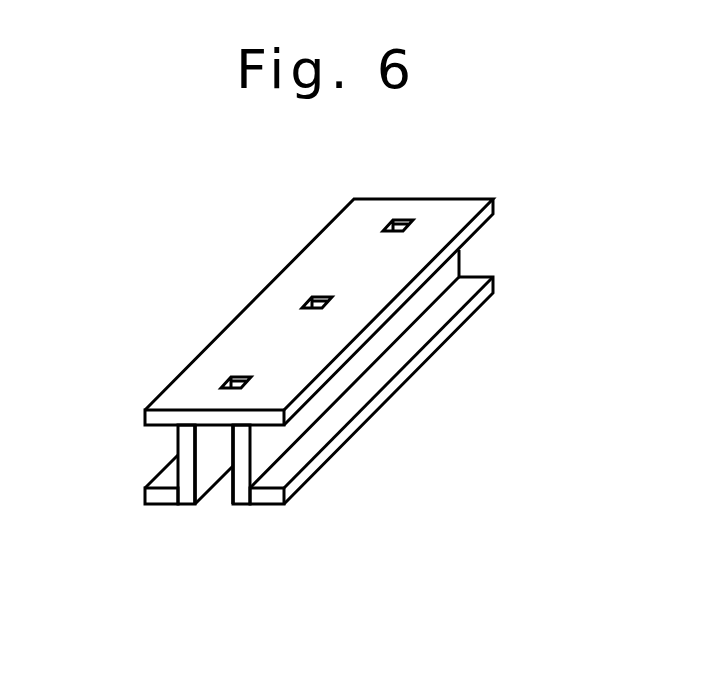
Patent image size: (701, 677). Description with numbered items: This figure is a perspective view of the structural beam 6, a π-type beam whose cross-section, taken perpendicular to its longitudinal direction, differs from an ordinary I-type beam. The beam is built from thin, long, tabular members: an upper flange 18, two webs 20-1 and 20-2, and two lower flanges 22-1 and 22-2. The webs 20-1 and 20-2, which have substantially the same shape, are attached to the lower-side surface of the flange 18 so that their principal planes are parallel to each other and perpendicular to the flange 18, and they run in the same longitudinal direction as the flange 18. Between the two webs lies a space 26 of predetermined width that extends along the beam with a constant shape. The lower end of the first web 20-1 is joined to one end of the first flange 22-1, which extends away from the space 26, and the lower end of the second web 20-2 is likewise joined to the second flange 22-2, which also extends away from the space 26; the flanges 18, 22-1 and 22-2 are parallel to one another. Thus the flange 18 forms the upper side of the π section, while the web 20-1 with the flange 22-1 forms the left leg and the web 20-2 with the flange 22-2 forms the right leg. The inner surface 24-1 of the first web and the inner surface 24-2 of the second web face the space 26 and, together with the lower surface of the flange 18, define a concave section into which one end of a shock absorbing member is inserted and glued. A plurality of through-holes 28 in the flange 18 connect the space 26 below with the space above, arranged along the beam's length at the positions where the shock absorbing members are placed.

The structural beam 6 is at (97, 248).
The flange 18 is at (144, 421).
The first web 20-1 is at (207, 452).
The second web 20-2 is at (265, 445).
The first flange 22-1 is at (160, 507).
The second flange 22-2 is at (268, 507).
The inner surface of the first web 24-1 is at (205, 482).
The inner surface of the second web 24-2 is at (234, 485).
The space 26 is at (178, 453).
The through-holes 28 is at (316, 298).